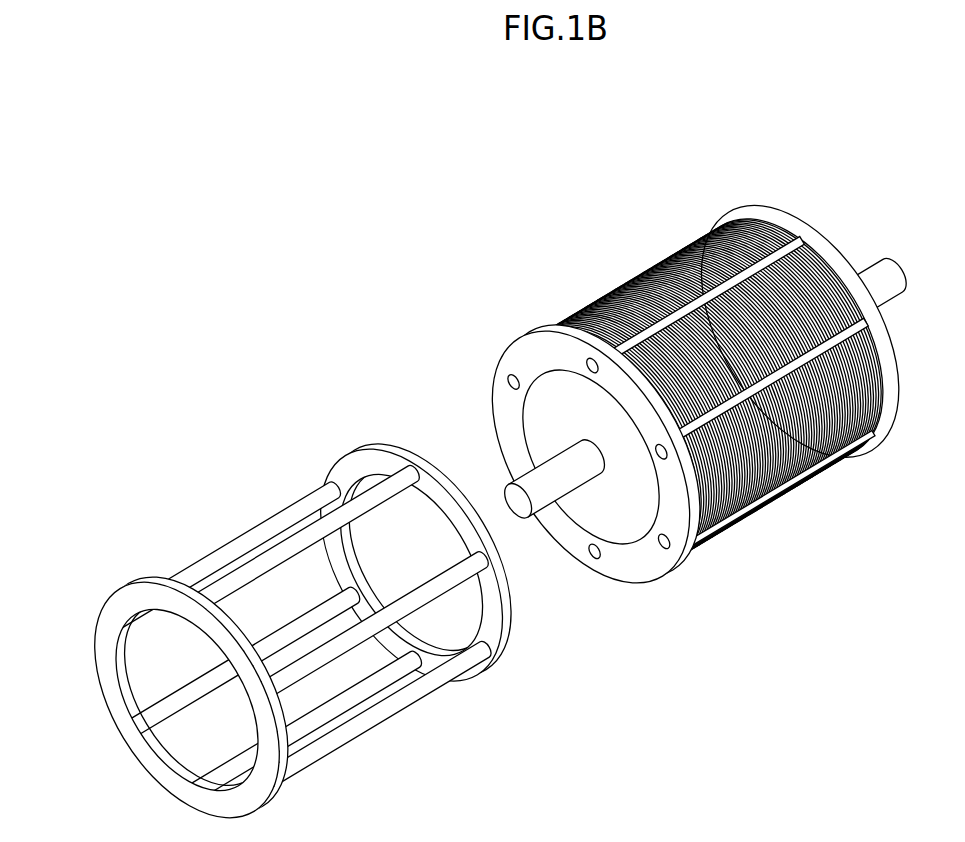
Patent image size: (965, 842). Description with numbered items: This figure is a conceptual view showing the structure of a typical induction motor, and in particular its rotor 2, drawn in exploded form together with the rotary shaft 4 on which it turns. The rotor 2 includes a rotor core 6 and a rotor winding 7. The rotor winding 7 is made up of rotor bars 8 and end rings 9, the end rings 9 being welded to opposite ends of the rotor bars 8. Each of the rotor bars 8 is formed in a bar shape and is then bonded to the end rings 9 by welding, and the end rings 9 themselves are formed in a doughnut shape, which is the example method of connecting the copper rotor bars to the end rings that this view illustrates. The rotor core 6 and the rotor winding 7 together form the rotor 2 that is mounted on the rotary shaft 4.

The rotor 2 is at (674, 208).
The rotary shaft 4 is at (850, 301).
The rotor core 6 is at (596, 454).
The rotor winding 7 is at (728, 375).
The rotor bars 8 is at (262, 538).
The end rings 9 is at (492, 617).